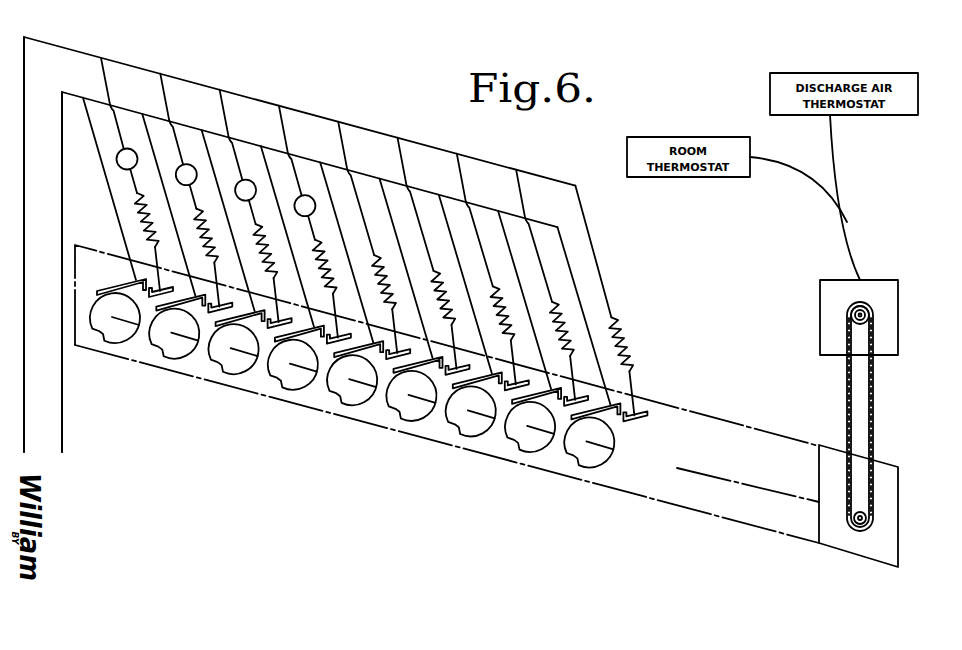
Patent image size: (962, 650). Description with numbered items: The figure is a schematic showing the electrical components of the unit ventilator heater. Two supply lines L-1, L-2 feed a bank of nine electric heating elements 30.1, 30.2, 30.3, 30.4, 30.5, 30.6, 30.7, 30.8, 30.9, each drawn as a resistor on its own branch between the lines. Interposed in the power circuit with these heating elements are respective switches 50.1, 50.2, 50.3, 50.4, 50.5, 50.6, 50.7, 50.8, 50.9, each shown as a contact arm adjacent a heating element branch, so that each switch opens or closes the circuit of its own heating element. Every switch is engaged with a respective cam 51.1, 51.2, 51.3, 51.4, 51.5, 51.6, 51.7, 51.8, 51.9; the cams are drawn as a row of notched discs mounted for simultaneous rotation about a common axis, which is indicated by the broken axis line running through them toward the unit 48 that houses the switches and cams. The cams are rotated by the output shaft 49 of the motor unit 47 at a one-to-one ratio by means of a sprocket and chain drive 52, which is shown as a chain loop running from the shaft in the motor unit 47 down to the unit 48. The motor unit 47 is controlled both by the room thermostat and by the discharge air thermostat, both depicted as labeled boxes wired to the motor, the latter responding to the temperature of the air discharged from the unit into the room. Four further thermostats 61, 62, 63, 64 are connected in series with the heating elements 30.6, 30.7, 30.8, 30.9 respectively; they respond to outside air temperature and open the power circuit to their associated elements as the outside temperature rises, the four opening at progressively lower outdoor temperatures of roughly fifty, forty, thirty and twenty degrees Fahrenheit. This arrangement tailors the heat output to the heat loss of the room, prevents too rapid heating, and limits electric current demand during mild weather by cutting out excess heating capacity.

The heating element 30.1 is at (621, 338).
The heating element 30.2 is at (555, 309).
The heating element 30.3 is at (496, 292).
The heating element 30.4 is at (437, 278).
The heating element 30.5 is at (378, 264).
The heating element 30.6 is at (318, 244).
The heating element 30.7 is at (259, 229).
The heating element 30.8 is at (200, 214).
The heating element 30.9 is at (141, 199).
The switch 50.1 is at (622, 436).
The switch 50.2 is at (560, 421).
The switch 50.3 is at (501, 405).
The switch 50.4 is at (442, 390).
The switch 50.5 is at (382, 374).
The switch 50.6 is at (323, 359).
The switch 50.7 is at (264, 343).
The switch 50.8 is at (204, 328).
The switch 50.9 is at (145, 312).
The cam 51.1 is at (582, 458).
The cam 51.2 is at (523, 443).
The cam 51.3 is at (463, 427).
The cam 51.4 is at (404, 412).
The cam 51.5 is at (345, 396).
The cam 51.6 is at (285, 381).
The cam 51.7 is at (226, 365).
The cam 51.8 is at (166, 350).
The cam 51.9 is at (107, 334).
The thermostat 61 is at (305, 204).
The thermostat 62 is at (246, 188).
The thermostat 63 is at (187, 172).
The thermostat 64 is at (128, 157).
The motor unit 47 is at (896, 276).
The unit 48 is at (882, 538).
The output shaft 49 is at (868, 314).
The sprocket and chain drive 52 is at (878, 417).
The supply line L-1 is at (76, 286).
The supply line L-2 is at (18, 259).